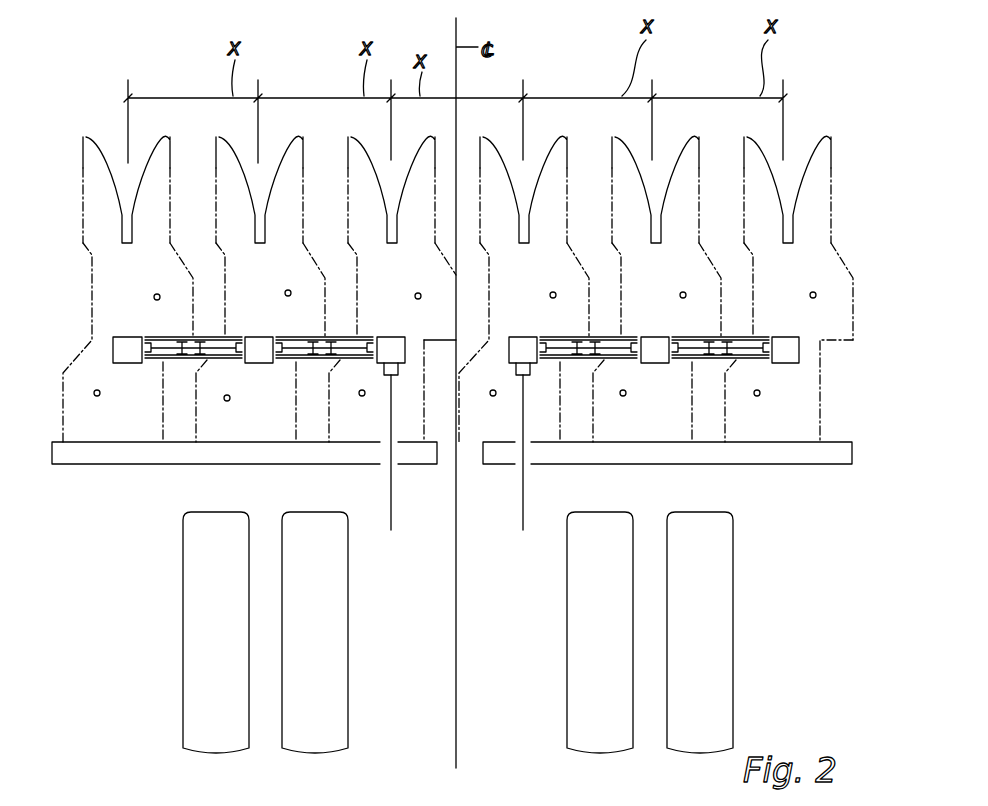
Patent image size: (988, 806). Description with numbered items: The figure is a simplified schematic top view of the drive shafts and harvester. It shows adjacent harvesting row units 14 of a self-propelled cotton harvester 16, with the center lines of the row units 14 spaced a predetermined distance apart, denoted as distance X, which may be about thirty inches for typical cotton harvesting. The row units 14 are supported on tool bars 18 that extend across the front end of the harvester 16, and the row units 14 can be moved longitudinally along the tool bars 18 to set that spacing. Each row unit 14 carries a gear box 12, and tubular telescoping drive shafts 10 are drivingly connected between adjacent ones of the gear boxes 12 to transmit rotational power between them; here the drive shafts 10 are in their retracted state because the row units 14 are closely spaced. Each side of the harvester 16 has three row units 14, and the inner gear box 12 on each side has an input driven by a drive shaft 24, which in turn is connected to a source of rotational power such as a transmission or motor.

The tubular telescoping drive shaft 10 is at (153, 335).
The gear box 12 is at (258, 334).
The harvesting row unit 14 is at (83, 134).
The self-propelled cotton harvester 16 is at (848, 414).
The tool bar 18 is at (888, 476).
The drive shaft 24 is at (525, 481).